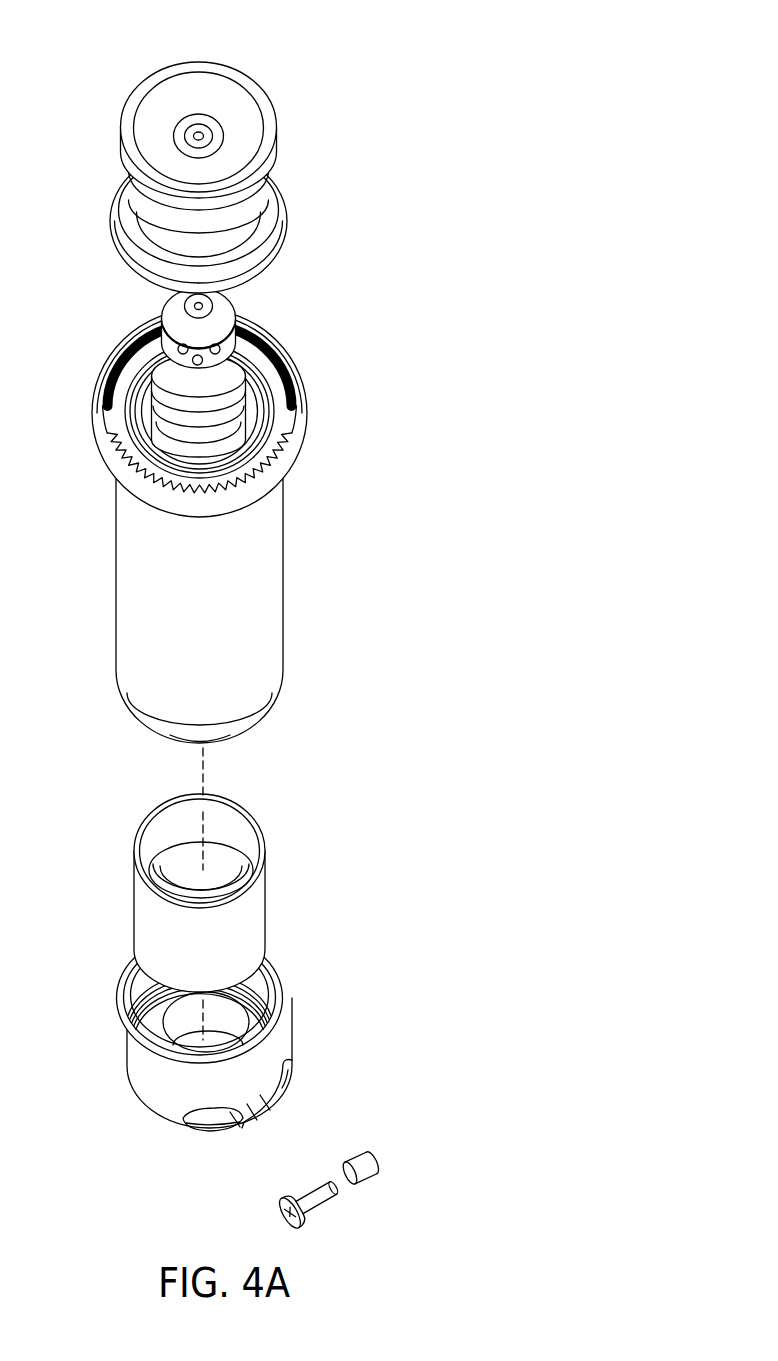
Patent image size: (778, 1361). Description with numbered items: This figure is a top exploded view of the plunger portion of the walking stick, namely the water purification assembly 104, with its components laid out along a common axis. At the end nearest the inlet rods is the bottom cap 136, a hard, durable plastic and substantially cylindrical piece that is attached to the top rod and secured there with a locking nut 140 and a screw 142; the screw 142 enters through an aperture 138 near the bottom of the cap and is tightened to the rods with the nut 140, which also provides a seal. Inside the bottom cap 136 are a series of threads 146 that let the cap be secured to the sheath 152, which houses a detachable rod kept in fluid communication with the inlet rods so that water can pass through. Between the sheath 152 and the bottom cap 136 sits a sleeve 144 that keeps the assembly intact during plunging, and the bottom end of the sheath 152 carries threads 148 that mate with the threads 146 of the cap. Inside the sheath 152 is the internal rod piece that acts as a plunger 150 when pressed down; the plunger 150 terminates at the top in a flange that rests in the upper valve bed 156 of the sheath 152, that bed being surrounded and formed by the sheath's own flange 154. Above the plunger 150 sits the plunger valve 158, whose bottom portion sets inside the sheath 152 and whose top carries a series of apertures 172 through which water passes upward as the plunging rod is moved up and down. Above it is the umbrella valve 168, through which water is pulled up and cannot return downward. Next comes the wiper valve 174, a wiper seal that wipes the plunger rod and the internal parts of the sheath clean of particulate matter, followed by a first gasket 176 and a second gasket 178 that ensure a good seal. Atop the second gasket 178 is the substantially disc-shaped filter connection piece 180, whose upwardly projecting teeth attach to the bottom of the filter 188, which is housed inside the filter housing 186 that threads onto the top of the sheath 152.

The water purification assembly 104 is at (524, 70).
The bottom cap 136 is at (150, 1098).
The aperture 138 is at (218, 1118).
The locking nut 140 is at (363, 1165).
The screw 142 is at (318, 1200).
The sleeve 144 is at (248, 905).
The threads 146 is at (278, 970).
The threads 148 is at (232, 724).
The plunger 150 is at (178, 742).
The sheath 152 is at (265, 633).
The flange 154 is at (253, 492).
The upper valve bed 156 is at (124, 418).
The plunger valve 158 is at (221, 383).
The umbrella valve 168 is at (170, 326).
The apertures 172 is at (220, 347).
The wiper valve 174 is at (240, 279).
The first gasket 176 is at (162, 277).
The second gasket 178 is at (223, 278).
The filter connection piece 180 is at (275, 207).
The filter housing 186 is at (270, 122).
The filter 188 is at (205, 85).